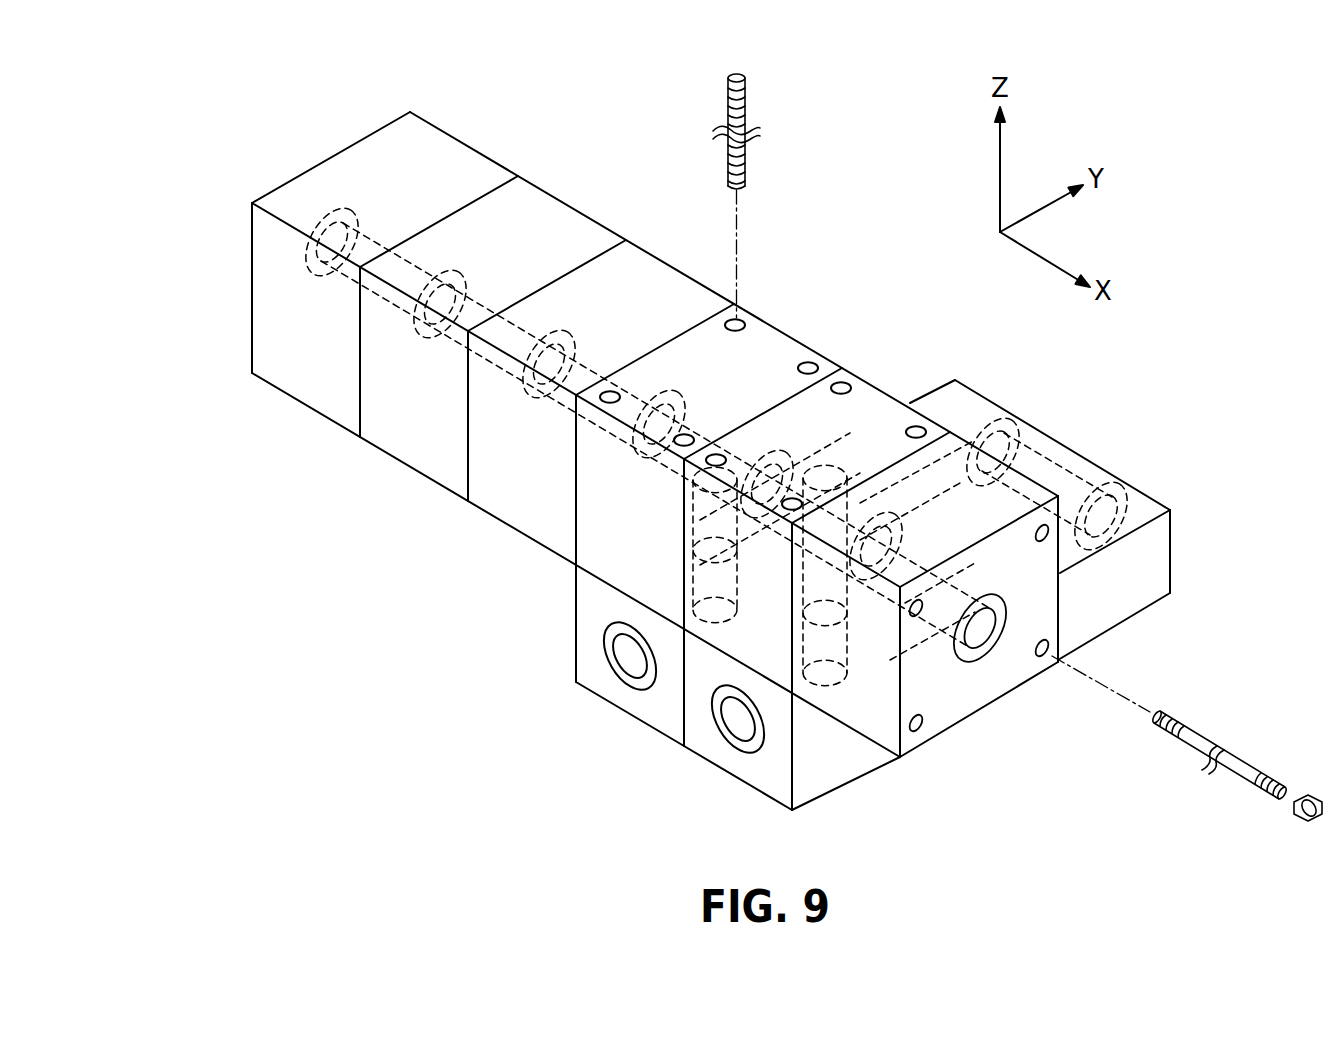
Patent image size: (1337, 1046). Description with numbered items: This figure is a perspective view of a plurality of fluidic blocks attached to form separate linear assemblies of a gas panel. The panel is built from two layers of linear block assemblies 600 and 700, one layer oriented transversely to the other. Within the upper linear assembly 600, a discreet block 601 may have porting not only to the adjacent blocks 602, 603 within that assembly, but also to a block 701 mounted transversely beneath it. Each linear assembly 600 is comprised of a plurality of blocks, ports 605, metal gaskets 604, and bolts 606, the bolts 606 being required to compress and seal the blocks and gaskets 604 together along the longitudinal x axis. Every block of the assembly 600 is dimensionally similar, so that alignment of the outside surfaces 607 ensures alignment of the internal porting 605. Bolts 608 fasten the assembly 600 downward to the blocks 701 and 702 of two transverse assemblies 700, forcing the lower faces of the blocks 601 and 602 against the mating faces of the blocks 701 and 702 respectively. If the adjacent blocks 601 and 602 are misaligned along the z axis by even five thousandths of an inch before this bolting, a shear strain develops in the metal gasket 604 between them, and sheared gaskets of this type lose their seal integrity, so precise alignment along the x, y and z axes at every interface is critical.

The linear block assembly 600 is at (638, 431).
The discreet block 601 is at (873, 396).
The adjacent block 602 is at (781, 337).
The adjacent block 603 is at (1042, 495).
The metal gasket 604 is at (985, 652).
The port 605 is at (973, 638).
The bolt 606 is at (1245, 757).
The outside surface 607 is at (427, 118).
The bolt 608 is at (747, 104).
The transverse linear block assembly 700 is at (993, 394).
The transverse block 701 is at (750, 784).
The transverse block 702 is at (613, 700).